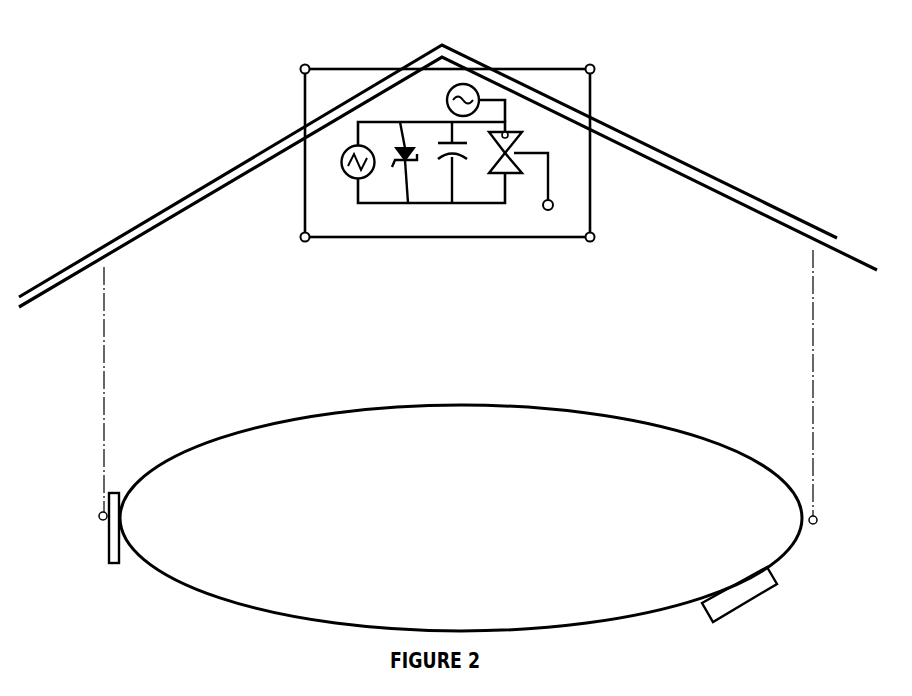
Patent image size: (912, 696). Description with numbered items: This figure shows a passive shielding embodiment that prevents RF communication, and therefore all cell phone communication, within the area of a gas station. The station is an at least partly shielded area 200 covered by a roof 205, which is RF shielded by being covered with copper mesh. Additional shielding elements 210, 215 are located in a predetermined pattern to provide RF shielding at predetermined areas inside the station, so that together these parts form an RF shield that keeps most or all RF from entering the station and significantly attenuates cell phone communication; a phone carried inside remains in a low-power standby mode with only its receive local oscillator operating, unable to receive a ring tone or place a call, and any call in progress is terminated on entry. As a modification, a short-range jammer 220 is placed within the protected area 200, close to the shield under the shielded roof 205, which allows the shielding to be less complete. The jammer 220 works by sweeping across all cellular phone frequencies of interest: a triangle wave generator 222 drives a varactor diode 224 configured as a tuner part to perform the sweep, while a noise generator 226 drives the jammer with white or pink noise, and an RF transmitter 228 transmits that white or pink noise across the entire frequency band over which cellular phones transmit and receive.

The at least partly shielded area 200 is at (461, 518).
The roof 205 is at (752, 207).
The shielding element 210 is at (119, 565).
The shielding element 215 is at (763, 595).
The short-range jammer 220 is at (317, 98).
The triangle wave generator 222 is at (343, 152).
The varactor diode 224 is at (413, 172).
The noise generator 226 is at (462, 83).
The RF transmitter 228 is at (515, 183).